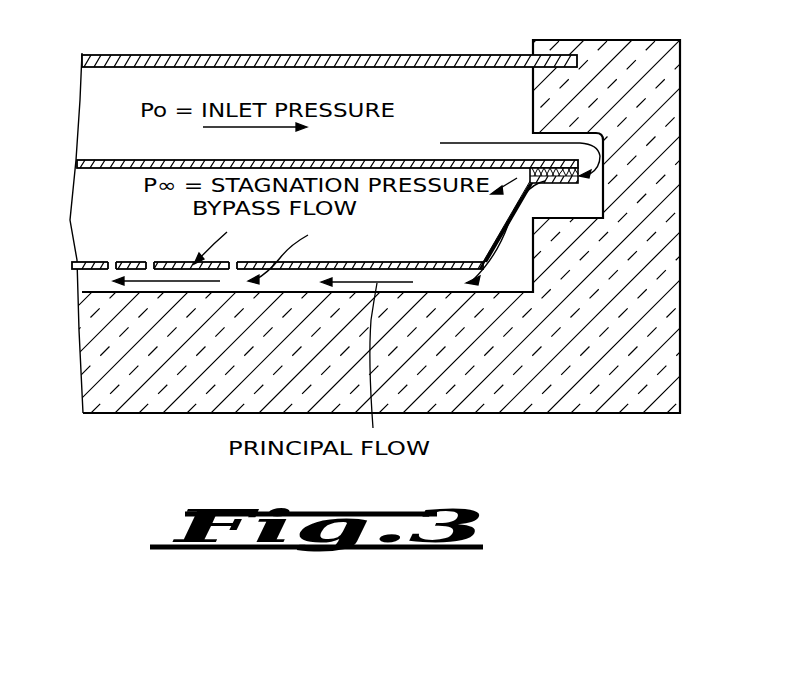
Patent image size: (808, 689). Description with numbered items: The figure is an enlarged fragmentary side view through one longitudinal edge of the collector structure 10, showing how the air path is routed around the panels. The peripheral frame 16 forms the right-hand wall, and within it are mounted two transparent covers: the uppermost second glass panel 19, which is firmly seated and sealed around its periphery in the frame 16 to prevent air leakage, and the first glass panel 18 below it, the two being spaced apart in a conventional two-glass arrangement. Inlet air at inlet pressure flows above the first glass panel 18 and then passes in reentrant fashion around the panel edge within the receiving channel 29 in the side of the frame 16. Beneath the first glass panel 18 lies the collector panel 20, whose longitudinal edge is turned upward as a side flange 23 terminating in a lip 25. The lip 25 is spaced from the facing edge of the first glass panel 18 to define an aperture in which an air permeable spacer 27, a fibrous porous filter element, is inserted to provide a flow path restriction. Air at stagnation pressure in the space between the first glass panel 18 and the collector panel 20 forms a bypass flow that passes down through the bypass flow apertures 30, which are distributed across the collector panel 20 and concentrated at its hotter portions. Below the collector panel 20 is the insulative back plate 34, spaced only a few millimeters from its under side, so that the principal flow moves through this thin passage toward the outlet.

The collector structure 10 is at (404, 239).
The peripheral frame 16 is at (681, 303).
The first glass panel 18 is at (420, 160).
The second glass panel 19 is at (413, 55).
The collector panel 20 is at (404, 262).
The side flange 23 is at (490, 249).
The lip 25 is at (570, 183).
The air permeable spacer 27 is at (540, 180).
The receiving channel 29 is at (604, 146).
The bypass flow apertures 30 is at (151, 262).
The insulative back plate 34 is at (142, 401).